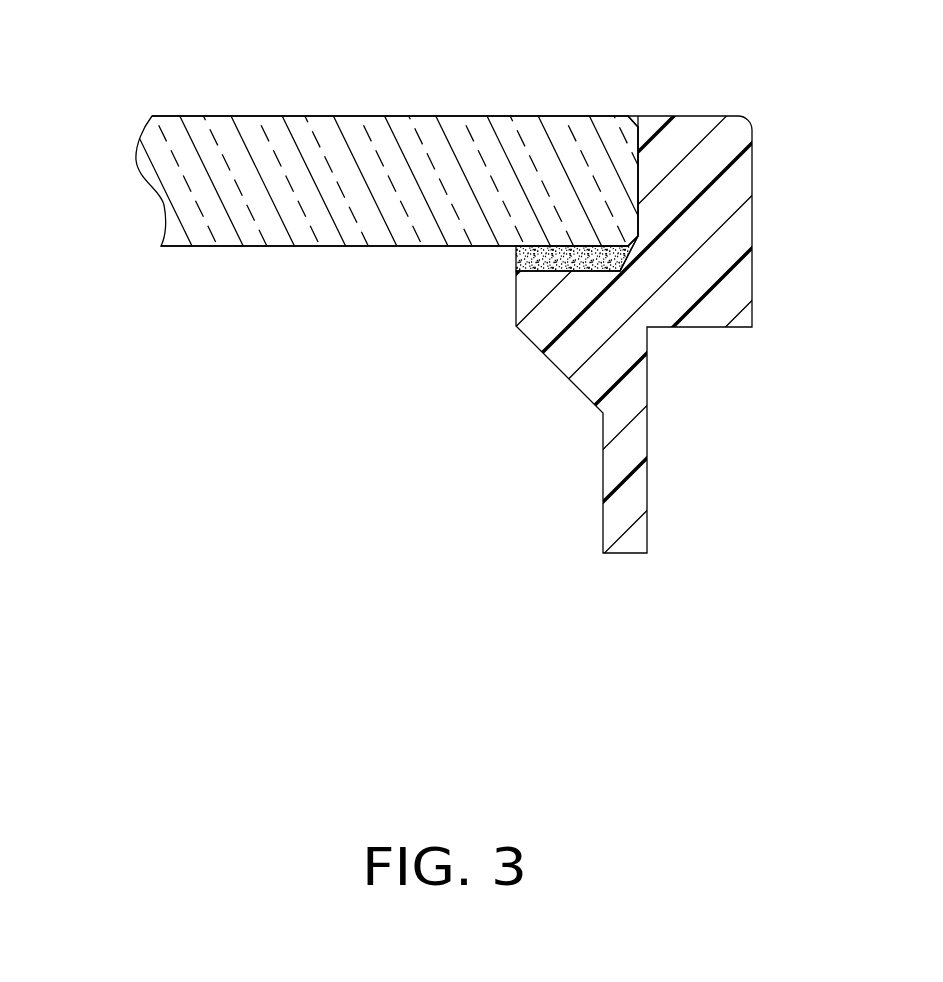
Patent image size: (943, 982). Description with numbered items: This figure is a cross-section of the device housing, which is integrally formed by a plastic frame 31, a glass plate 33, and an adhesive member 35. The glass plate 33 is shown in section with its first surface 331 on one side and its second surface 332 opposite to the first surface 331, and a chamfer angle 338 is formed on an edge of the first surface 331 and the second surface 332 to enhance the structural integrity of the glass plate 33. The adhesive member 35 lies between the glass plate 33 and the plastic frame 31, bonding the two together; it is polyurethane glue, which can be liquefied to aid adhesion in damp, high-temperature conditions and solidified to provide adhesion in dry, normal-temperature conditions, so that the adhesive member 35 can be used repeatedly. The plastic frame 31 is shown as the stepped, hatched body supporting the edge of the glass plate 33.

The plastic frame 31 is at (705, 212).
The glass plate 33 is at (187, 173).
The first surface 331 is at (240, 112).
The second surface 332 is at (240, 252).
The chamfer angle 338 is at (633, 118).
The adhesive member 35 is at (513, 260).